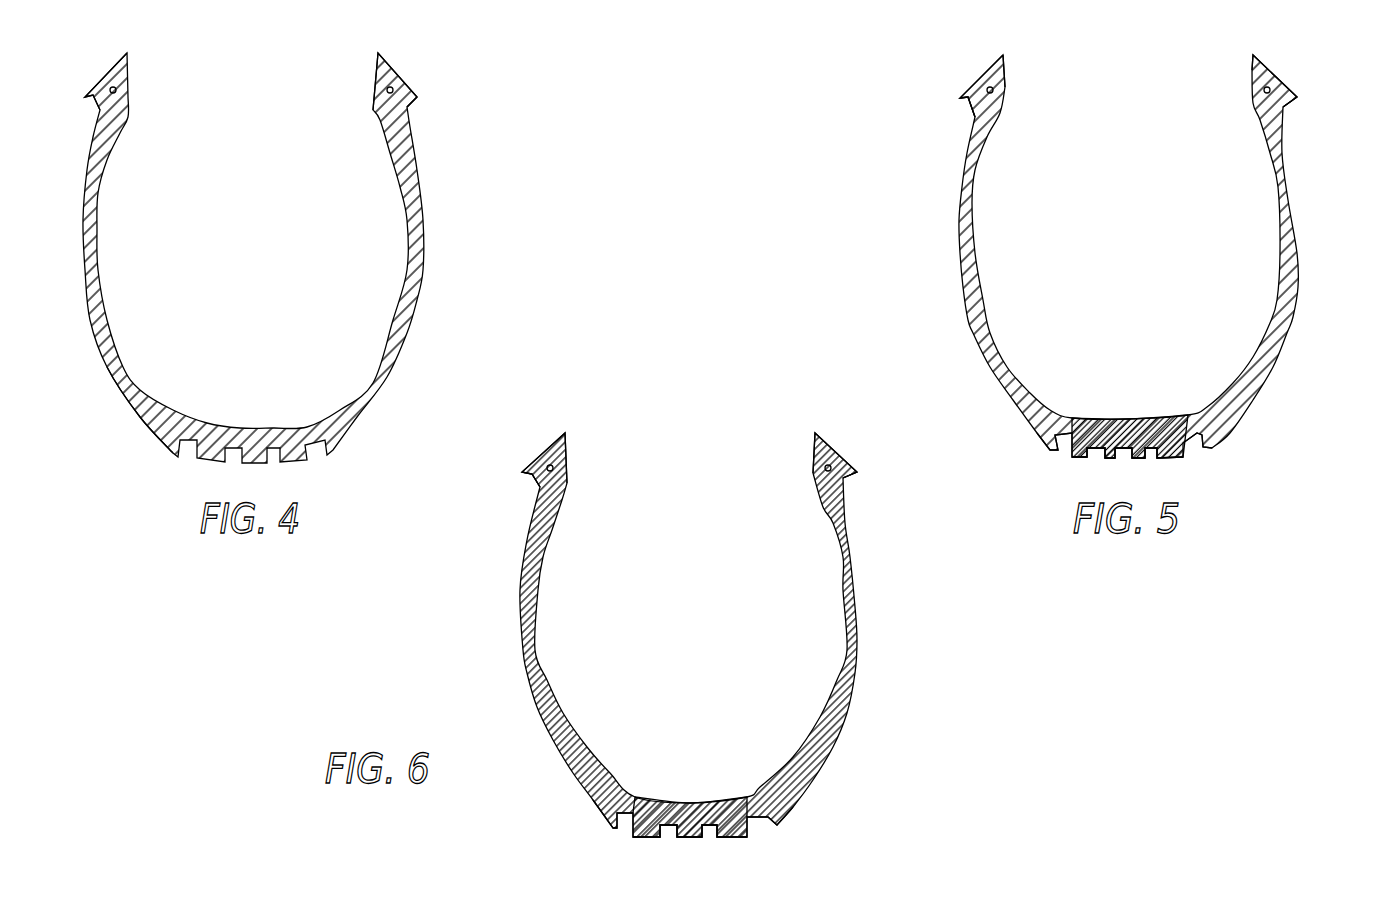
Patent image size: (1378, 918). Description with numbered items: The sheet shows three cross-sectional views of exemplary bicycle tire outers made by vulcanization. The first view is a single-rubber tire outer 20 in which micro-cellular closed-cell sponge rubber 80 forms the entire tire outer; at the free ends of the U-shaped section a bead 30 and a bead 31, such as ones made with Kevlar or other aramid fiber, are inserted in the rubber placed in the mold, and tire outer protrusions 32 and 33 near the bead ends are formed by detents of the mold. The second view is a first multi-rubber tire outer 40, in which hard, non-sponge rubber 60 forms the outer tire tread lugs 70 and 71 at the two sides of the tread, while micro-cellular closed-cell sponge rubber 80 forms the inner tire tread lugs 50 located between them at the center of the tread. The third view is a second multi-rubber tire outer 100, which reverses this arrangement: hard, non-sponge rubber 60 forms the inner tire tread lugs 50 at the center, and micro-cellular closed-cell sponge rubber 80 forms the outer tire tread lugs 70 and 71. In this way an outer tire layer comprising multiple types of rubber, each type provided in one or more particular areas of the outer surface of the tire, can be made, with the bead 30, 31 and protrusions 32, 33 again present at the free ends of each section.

In FIG. 4, the single-rubber tire outer 20 is at (347, 413).
In FIG. 4, the bead 30 is at (393, 88).
In FIG. 5, the bead 30 is at (1267, 88).
In FIG. 6, the bead 30 is at (828, 465).
In FIG. 4, the bead 31 is at (117, 88).
In FIG. 5, the bead 31 is at (993, 88).
In FIG. 6, the bead 31 is at (553, 467).
In FIG. 4, the tire outer protrusion 32 is at (416, 97).
In FIG. 5, the tire outer protrusion 32 is at (1292, 97).
In FIG. 6, the tire outer protrusion 32 is at (857, 475).
In FIG. 4, the tire outer protrusion 33 is at (94, 92).
In FIG. 5, the tire outer protrusion 33 is at (965, 95).
In FIG. 6, the tire outer protrusion 33 is at (525, 475).
In FIG. 5, the multi-rubber tire outer 40 is at (1003, 57).
In FIG. 5, the inner tire tread lugs 50 is at (1173, 452).
In FIG. 6, the inner tire tread lugs 50 is at (735, 832).
In FIG. 5, the hard, non-sponge rubber 60 is at (1237, 385).
In FIG. 6, the hard, non-sponge rubber 60 is at (667, 813).
In FIG. 5, the outer tire tread lug 70 is at (1212, 448).
In FIG. 6, the outer tire tread lug 70 is at (777, 825).
In FIG. 5, the outer tire tread lug 71 is at (1050, 450).
In FIG. 6, the outer tire tread lug 71 is at (613, 828).
In FIG. 4, the micro-cellular closed-cell sponge rubber 80 is at (147, 403).
In FIG. 5, the micro-cellular closed-cell sponge rubber 80 is at (1108, 433).
In FIG. 6, the micro-cellular closed-cell sponge rubber 80 is at (800, 763).
In FIG. 6, the multi-rubber tire outer 100 is at (565, 433).